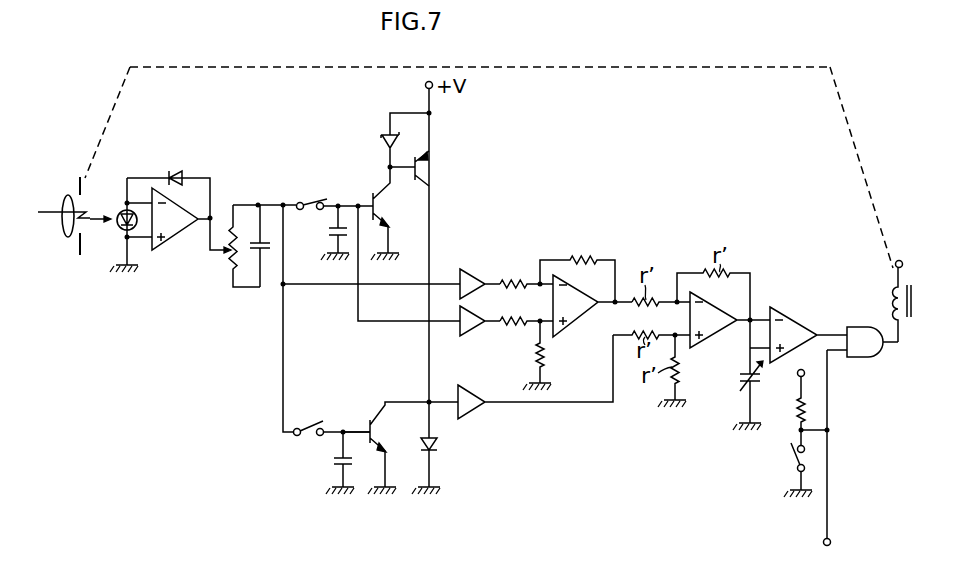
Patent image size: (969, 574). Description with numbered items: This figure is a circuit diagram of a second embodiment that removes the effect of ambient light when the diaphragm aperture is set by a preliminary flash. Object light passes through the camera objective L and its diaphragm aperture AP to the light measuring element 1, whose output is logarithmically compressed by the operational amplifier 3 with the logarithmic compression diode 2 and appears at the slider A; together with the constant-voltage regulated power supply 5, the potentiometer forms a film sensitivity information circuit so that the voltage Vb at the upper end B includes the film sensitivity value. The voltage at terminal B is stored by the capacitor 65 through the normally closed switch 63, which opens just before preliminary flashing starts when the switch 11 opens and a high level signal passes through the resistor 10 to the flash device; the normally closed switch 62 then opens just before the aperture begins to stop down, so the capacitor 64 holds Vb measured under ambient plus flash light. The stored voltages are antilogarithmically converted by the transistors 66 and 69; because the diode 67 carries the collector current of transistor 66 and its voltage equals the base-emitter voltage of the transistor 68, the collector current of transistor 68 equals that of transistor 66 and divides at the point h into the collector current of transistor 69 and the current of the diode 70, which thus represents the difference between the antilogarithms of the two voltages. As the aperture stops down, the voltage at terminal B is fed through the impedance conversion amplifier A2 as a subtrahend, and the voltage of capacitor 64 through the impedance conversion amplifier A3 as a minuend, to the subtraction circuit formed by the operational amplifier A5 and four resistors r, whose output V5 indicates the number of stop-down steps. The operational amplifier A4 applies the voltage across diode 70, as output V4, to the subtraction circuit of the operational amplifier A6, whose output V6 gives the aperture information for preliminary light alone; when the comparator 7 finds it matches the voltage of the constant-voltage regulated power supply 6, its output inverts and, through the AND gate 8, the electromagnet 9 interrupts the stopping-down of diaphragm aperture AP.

The camera objective L is at (67, 232).
The diaphragm aperture AP is at (81, 183).
The light measuring element 1 is at (118, 229).
The logarithmic compression diode 2 is at (176, 171).
The operational amplifier 3 is at (182, 232).
The slider A is at (215, 222).
The upper end of potentiometer (terminal B) B is at (258, 204).
The constant-voltage regulated power supply 5 is at (266, 256).
The switch 62 is at (308, 202).
The switch 63 is at (298, 428).
The capacitor 64 is at (332, 236).
The capacitor 65 is at (333, 463).
The transistor 66 is at (372, 204).
The diode 67 is at (383, 136).
The transistor 68 is at (422, 167).
The transistor 69 is at (369, 422).
The diode 70 is at (436, 448).
The point h (node h) h is at (430, 401).
The impedance conversion amplifier A2 is at (473, 277).
The impedance conversion amplifier A3 is at (473, 326).
The operational amplifier A4 is at (463, 418).
The operational amplifier A5 is at (582, 322).
The operational amplifier A6 is at (706, 336).
The output of operational amplifier A4 V4 is at (502, 424).
The output of operational amplifier A5 V5 is at (617, 298).
The output of operational amplifier A6 V6 is at (752, 318).
The resistor r is at (513, 281).
The constant-voltage regulated power supply 6 is at (740, 377).
The comparator 7 is at (793, 320).
The AND gate 8 is at (860, 327).
The electromagnet 9 is at (912, 310).
The resistor 10 is at (797, 413).
The switch 11 is at (795, 463).